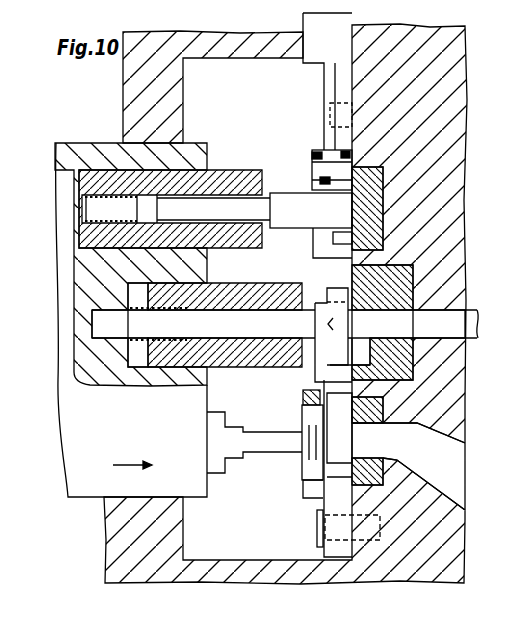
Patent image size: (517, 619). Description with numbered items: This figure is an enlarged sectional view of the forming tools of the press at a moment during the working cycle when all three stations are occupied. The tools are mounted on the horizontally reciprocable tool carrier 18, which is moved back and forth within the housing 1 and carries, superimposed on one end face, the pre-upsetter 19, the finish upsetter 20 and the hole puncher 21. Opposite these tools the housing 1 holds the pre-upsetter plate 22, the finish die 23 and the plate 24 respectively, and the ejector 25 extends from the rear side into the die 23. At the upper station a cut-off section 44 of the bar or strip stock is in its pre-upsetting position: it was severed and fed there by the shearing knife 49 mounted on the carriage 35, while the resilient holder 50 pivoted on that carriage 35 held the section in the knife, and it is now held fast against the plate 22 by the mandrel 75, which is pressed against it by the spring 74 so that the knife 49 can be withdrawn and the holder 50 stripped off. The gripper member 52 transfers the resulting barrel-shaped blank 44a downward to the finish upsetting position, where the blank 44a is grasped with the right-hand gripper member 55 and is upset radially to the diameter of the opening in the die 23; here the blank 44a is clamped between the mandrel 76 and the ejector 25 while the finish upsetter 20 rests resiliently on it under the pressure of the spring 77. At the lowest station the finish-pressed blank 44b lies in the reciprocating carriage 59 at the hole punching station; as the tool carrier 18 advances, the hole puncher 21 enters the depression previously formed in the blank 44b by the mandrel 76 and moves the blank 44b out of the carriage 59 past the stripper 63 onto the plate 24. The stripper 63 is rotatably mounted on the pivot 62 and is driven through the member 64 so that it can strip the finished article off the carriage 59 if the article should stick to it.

The housing 1 is at (450, 540).
The tool carrier 18 is at (107, 477).
The pre-presser or upsetter 19 is at (233, 177).
The finish presser or upsetter 20 is at (230, 352).
The hole puncher 21 is at (262, 452).
The pre-upsetter plate 22 is at (370, 208).
The finish die 23 is at (403, 277).
The plate 24 is at (373, 408).
The ejector 25 is at (462, 323).
The carriage 35 is at (322, 250).
The bar or strip material 44 is at (292, 202).
The barrel-shaped blank 44a is at (333, 295).
The blank 44b is at (312, 418).
The shearing knife 49 is at (337, 236).
The holder 50 is at (311, 152).
The gripper member 52 is at (335, 88).
The right-hand gripper member 55 is at (338, 372).
The reciprocating carriage 59 is at (303, 390).
The pivot 62 is at (320, 530).
The stripper 63 is at (340, 438).
The member 64 is at (320, 500).
The spring 74 is at (120, 202).
The mandrel 75 is at (95, 205).
The mandrel 76 is at (244, 320).
The spring 77 is at (206, 300).